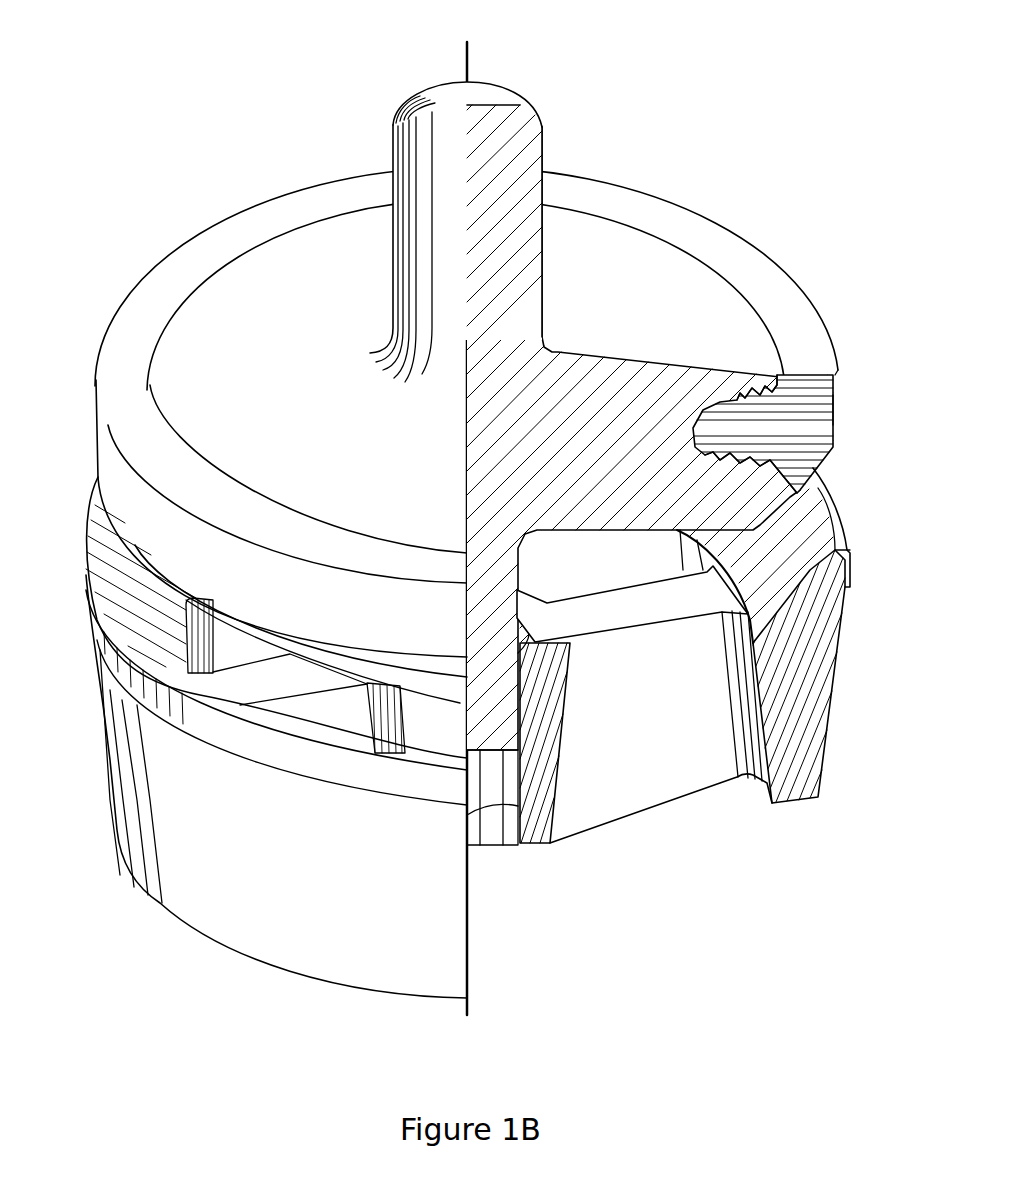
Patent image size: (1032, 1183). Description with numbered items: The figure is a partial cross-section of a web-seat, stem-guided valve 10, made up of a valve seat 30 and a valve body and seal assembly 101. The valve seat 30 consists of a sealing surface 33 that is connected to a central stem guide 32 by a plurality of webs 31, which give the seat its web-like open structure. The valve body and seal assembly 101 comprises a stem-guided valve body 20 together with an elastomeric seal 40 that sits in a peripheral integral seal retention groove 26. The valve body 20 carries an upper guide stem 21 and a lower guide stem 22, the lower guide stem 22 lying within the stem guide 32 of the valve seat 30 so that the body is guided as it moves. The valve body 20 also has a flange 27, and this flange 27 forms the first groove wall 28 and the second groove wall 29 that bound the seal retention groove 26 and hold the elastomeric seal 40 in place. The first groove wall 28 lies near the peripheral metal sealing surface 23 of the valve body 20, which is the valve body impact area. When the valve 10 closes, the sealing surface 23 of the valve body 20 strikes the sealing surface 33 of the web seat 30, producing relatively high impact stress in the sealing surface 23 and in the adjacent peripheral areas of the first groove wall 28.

The web-seat, stem-guided valve 10 is at (114, 165).
The valve body and seal assembly 101 is at (195, 200).
The stem-guided valve body 20 is at (340, 212).
The guide stem 21 is at (543, 143).
The second groove wall 29 is at (737, 398).
The peripheral integral seal retention groove 26 is at (762, 440).
The elastomeric seal 40 is at (834, 420).
The flange 27 is at (650, 456).
The first groove wall 28 is at (790, 456).
The peripheral metal sealing surface 23 is at (803, 500).
The sealing surface 33 is at (837, 510).
The webs 31 is at (642, 619).
The stem guide 32 is at (490, 818).
The guide stem 22 is at (473, 813).
The valve seat 30 is at (698, 814).